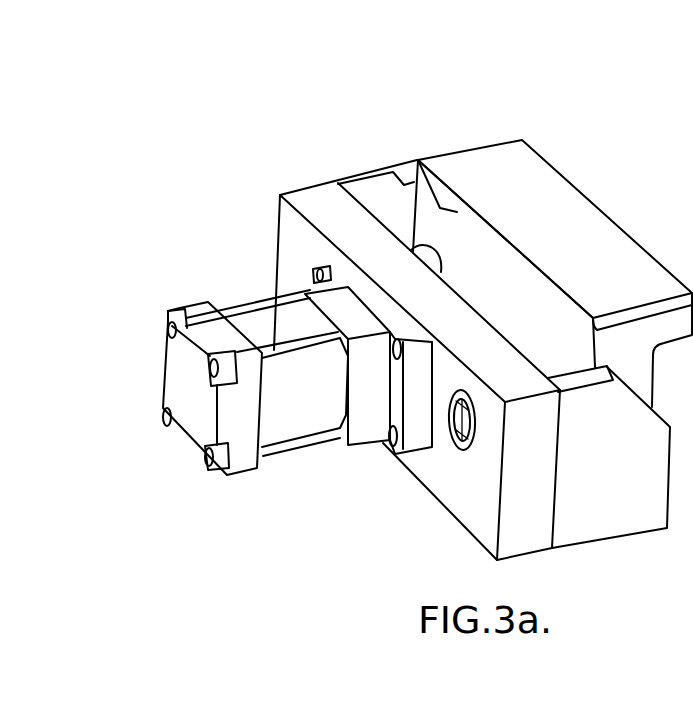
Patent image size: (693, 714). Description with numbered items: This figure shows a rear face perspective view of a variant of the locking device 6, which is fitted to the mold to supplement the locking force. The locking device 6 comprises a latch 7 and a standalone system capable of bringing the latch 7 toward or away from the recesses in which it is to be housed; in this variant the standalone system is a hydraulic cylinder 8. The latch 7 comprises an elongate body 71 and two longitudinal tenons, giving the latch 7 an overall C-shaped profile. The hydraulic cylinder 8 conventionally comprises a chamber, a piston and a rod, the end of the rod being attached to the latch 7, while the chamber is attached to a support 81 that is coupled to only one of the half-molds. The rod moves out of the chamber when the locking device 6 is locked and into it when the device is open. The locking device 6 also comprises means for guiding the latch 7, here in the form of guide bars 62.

The locking device 6 is at (247, 203).
The latch 7 is at (570, 172).
The elongate body 71 is at (417, 160).
The hydraulic cylinder 8 is at (318, 452).
The support 81 is at (380, 211).
The guide bars 62 is at (455, 432).